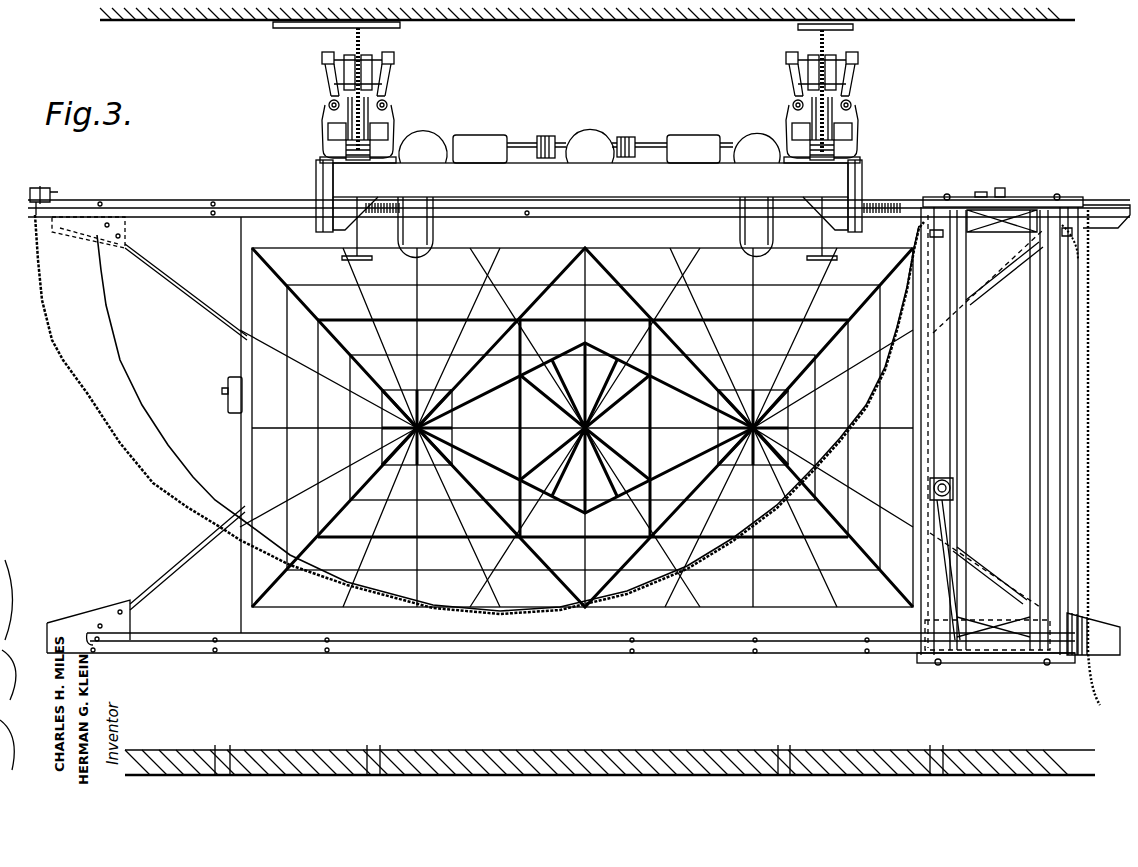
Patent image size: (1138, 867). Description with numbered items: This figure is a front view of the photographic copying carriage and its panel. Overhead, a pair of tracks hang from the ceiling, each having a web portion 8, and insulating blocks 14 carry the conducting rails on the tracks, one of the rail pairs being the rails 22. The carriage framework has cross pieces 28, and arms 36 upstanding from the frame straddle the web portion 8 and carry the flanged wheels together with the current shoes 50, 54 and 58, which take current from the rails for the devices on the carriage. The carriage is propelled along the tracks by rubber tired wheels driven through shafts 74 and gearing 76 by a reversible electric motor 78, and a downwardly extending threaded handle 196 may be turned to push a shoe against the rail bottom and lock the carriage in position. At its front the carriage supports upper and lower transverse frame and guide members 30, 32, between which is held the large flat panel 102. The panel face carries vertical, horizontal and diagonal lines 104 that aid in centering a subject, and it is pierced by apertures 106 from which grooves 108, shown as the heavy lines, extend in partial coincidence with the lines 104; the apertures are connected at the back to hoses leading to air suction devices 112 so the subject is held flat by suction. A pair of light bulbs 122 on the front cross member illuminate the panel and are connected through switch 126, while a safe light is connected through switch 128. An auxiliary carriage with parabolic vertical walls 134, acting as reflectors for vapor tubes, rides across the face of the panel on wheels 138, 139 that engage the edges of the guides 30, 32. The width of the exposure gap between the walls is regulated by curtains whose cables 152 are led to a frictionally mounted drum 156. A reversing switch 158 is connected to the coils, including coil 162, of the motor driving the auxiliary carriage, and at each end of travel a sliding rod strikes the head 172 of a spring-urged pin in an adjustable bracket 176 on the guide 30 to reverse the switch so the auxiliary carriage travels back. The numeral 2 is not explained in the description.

The ceiling 2 is at (594, 22).
The web portion 8 is at (828, 62).
The insulating blocks 14 is at (372, 74).
The conducting rails 22 is at (378, 58).
The cross pieces 28 is at (589, 196).
The upper frame and guide member 30 is at (883, 205).
The lower guide member 32 is at (701, 650).
The arms 36 is at (852, 126).
The shoe 50 is at (858, 74).
The shoe 54 is at (786, 76).
The shoe 58 is at (792, 104).
The shafts 74 is at (648, 146).
The gearing 76 is at (592, 134).
The electric motor 78 is at (592, 160).
The panel 102 is at (110, 328).
The lines 104 is at (270, 430).
The apertures 106 is at (295, 290).
The grooves 108 is at (488, 140).
The air suction devices 112 is at (428, 140).
The light bulbs 122 is at (580, 222).
The switch 126 is at (950, 460).
The switch 128 is at (230, 380).
The vertical walls 134 is at (1040, 385).
The wheels 138 is at (958, 187).
The wheels 139 is at (940, 665).
The cables 152 is at (1015, 590).
The drum 156 is at (950, 492).
The reversing switch 158 is at (1002, 192).
The coil 162 is at (1090, 515).
The head 172 is at (50, 194).
The bracket 176 is at (34, 192).
The handle 196 is at (824, 240).